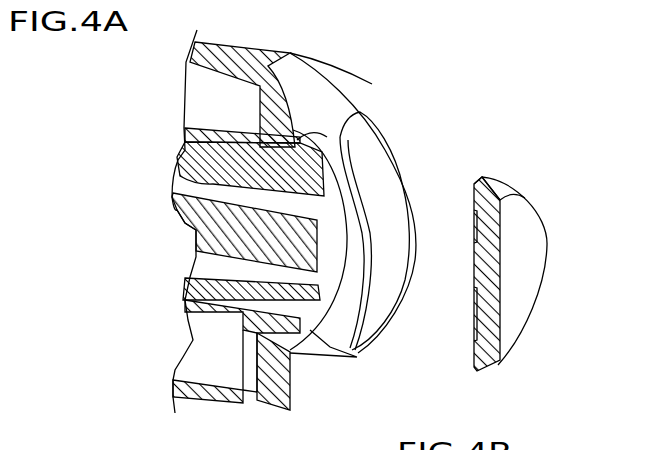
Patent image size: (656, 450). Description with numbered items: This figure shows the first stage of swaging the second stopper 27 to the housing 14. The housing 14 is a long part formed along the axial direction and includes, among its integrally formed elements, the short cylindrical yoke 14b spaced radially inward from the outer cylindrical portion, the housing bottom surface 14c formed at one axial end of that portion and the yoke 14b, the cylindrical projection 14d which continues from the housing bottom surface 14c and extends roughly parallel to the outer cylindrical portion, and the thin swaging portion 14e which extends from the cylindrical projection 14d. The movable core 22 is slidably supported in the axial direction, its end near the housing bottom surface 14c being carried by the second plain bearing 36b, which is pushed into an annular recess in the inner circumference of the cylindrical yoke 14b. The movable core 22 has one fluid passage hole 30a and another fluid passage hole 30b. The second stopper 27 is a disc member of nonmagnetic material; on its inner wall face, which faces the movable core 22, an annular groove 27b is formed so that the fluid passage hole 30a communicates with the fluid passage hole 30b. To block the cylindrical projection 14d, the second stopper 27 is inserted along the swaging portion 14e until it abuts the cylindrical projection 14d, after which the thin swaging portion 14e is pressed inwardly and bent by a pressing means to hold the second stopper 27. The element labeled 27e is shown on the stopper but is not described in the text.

The housing 14 is at (300, 49).
The cylindrical yoke 14b is at (185, 140).
The housing bottom surface 14c is at (336, 67).
The cylindrical projection 14d is at (363, 113).
The swaging portion 14e is at (408, 170).
The movable core 22 is at (185, 231).
The fluid passage hole 30a is at (172, 172).
The fluid passage hole 30b is at (190, 272).
The second plain bearing 36b is at (240, 404).
The second stopper 27 is at (546, 237).
The cover plate edge 27e is at (520, 188).
The annular groove 27b is at (474, 327).